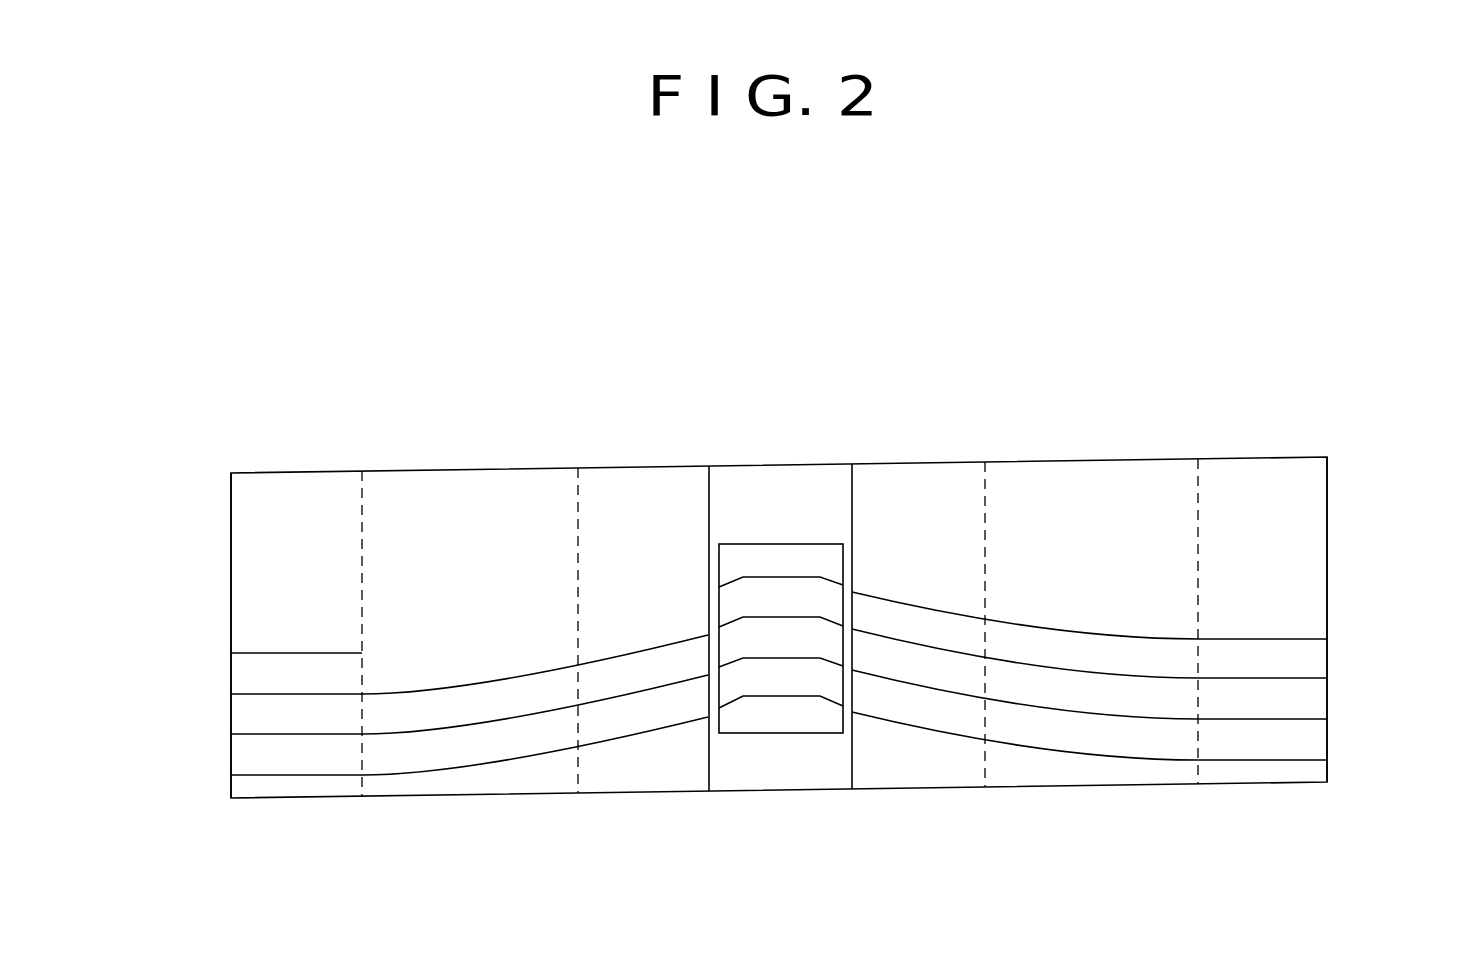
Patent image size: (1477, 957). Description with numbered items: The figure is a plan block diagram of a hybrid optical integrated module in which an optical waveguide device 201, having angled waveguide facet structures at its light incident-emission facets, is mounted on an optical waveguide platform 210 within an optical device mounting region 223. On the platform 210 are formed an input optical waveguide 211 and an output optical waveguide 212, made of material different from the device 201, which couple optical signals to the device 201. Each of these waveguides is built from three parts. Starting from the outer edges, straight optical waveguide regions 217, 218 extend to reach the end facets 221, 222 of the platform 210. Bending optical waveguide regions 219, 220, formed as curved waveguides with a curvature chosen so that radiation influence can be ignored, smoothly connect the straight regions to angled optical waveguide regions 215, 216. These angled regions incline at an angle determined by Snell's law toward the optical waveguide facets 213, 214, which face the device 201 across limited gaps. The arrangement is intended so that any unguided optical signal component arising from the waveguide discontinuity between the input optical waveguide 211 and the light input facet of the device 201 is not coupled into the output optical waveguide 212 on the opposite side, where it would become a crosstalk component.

The optical waveguide device 201 is at (790, 530).
The optical waveguide platform 210 is at (786, 797).
The input optical waveguide 211 is at (530, 763).
The output optical waveguide 212 is at (1040, 755).
The optical waveguide facet 213 is at (708, 522).
The optical waveguide facet 214 is at (852, 502).
The angled optical waveguide region 215 is at (593, 537).
The angled optical waveguide region 216 is at (958, 502).
The straight optical waveguide region 217 is at (362, 418).
The straight optical waveguide region 218 is at (1242, 493).
The bending optical waveguide region 219 is at (452, 507).
The bending optical waveguide region 220 is at (1083, 483).
The facet 221 is at (231, 495).
The facet 222 is at (1327, 493).
The optical device mounting region 223 is at (741, 497).